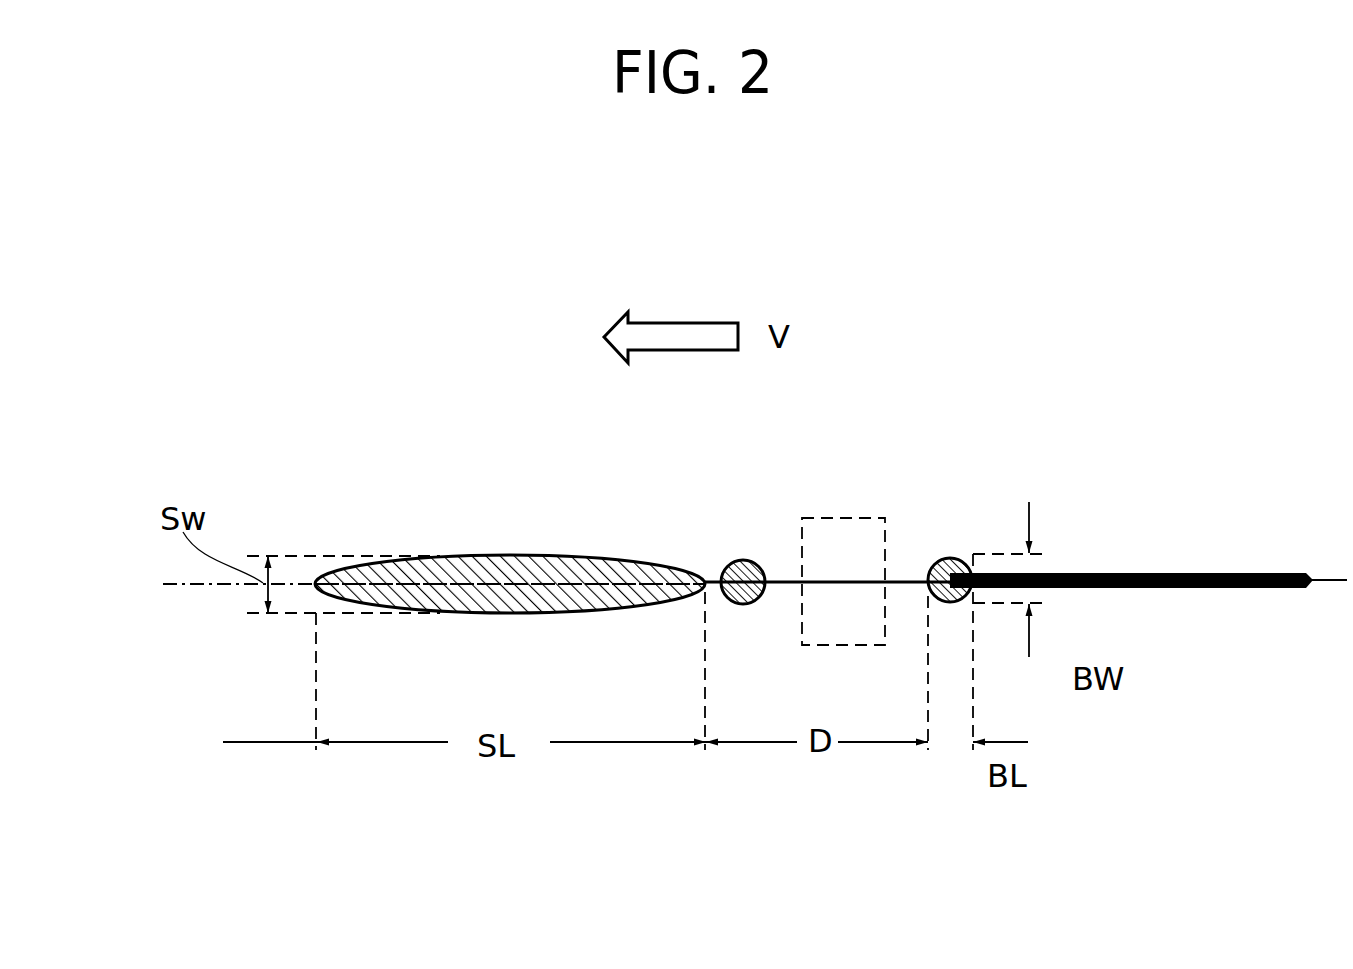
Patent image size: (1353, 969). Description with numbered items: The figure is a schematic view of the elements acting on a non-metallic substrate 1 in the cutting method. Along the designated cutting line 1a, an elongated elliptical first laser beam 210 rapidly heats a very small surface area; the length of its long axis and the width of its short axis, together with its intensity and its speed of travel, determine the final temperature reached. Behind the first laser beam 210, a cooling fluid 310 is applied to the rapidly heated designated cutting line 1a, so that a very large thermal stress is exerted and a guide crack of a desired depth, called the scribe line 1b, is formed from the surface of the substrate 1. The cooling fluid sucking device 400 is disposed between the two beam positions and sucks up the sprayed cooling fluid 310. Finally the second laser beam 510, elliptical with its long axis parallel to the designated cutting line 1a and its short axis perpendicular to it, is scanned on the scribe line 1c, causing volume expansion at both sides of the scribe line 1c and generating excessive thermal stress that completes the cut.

The non-metallic substrate 1 is at (1183, 869).
The designated cutting line 1a is at (170, 587).
The scribe line 1b is at (843, 583).
The scribe line 1c is at (1118, 570).
The first laser beam 210 is at (413, 560).
The cooling fluid 310 is at (742, 558).
The cooling fluid sucking device 400 is at (850, 535).
The second laser beam 510 is at (947, 553).